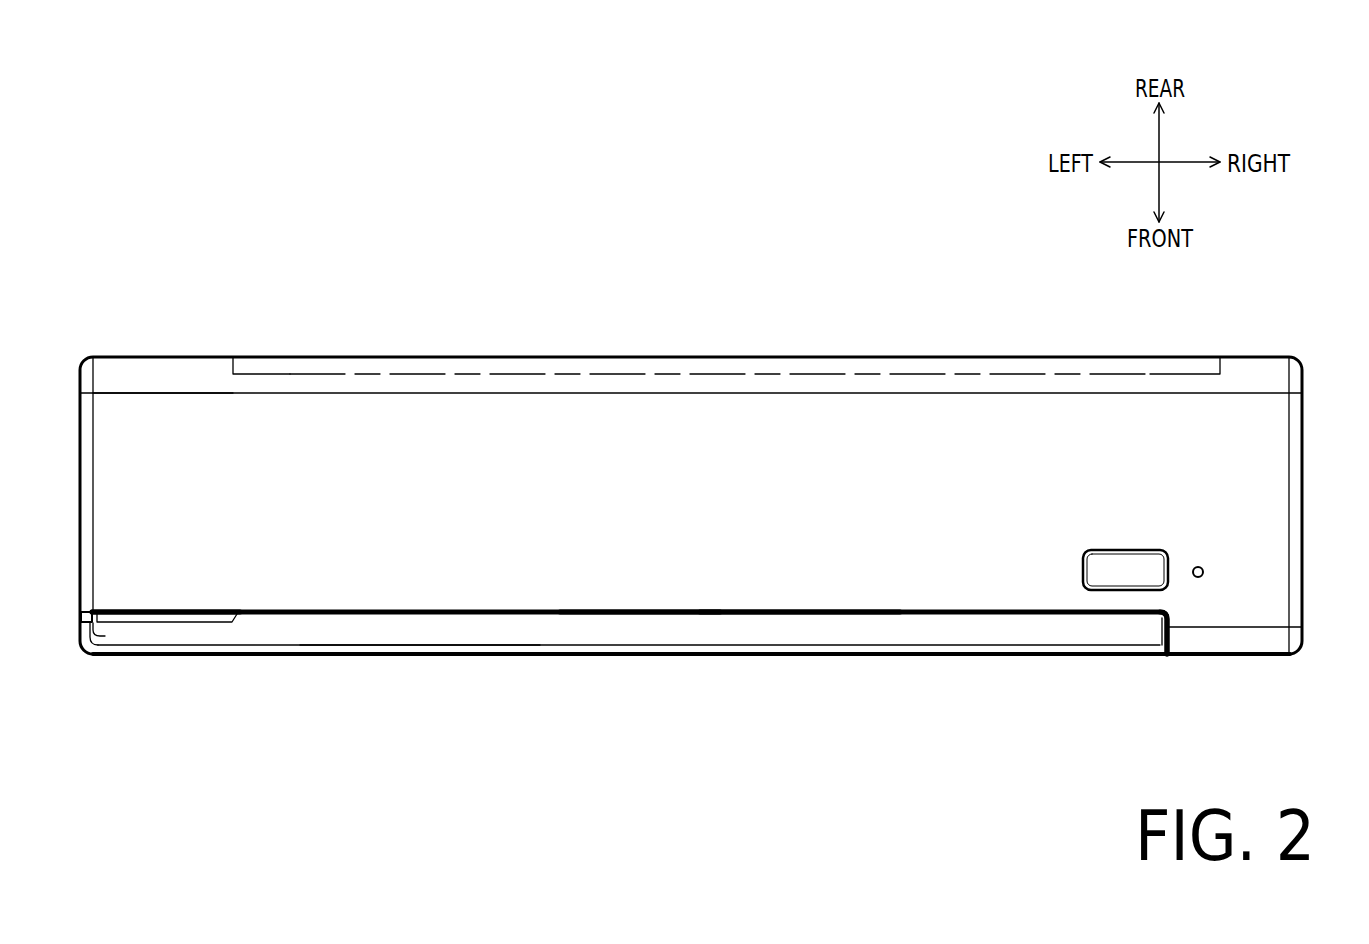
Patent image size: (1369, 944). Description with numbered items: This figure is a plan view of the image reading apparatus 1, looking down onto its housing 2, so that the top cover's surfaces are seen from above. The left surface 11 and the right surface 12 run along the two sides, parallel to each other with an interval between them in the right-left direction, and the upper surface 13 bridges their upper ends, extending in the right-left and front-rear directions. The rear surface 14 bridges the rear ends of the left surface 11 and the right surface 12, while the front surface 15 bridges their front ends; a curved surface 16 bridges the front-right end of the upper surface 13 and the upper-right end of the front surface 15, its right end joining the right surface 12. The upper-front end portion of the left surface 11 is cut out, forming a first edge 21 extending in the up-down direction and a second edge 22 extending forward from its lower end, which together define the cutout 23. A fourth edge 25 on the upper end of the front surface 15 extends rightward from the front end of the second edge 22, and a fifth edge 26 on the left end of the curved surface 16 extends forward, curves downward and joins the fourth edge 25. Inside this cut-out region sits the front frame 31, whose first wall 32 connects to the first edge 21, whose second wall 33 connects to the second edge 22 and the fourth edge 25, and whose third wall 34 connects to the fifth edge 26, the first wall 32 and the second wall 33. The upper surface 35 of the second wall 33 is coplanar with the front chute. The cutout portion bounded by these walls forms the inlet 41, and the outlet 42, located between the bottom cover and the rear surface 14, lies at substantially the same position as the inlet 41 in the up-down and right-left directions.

The image reading apparatus 1 is at (662, 789).
The housing 2 is at (1293, 348).
The left surface 11 is at (79, 490).
The right surface 12 is at (1304, 492).
The upper surface 13 is at (181, 400).
The rear surface 14 is at (738, 357).
The front surface 15 is at (788, 656).
The curved surface 16 is at (1231, 647).
The first edge 21 is at (108, 611).
The second edge 22 is at (107, 647).
The cutout 23 is at (96, 621).
The fourth edge 25 is at (266, 643).
The fifth edge 26 is at (1167, 628).
The front frame 31 is at (564, 627).
The first wall 32 is at (181, 623).
The second wall 33 is at (420, 625).
The third wall 34 is at (1159, 632).
The upper surface of the second wall 35 is at (800, 620).
The inlet 41 is at (641, 616).
The outlet 42 is at (601, 355).